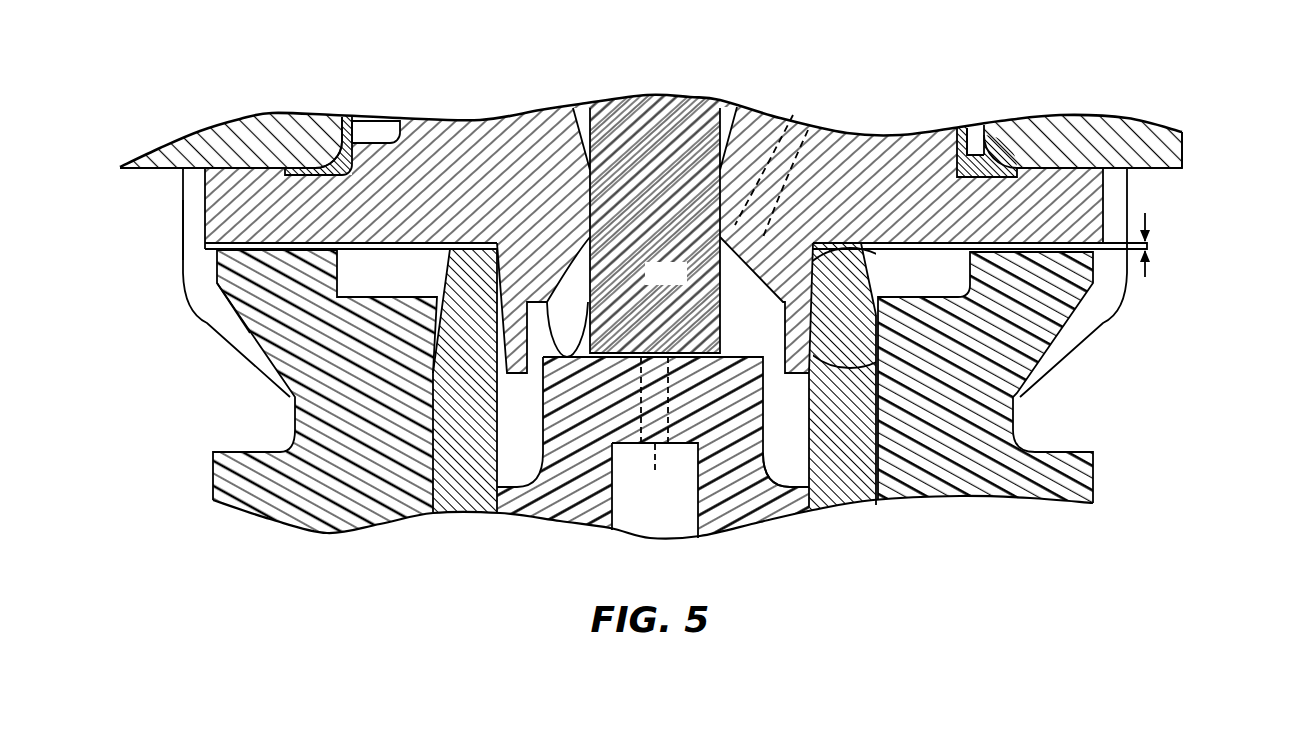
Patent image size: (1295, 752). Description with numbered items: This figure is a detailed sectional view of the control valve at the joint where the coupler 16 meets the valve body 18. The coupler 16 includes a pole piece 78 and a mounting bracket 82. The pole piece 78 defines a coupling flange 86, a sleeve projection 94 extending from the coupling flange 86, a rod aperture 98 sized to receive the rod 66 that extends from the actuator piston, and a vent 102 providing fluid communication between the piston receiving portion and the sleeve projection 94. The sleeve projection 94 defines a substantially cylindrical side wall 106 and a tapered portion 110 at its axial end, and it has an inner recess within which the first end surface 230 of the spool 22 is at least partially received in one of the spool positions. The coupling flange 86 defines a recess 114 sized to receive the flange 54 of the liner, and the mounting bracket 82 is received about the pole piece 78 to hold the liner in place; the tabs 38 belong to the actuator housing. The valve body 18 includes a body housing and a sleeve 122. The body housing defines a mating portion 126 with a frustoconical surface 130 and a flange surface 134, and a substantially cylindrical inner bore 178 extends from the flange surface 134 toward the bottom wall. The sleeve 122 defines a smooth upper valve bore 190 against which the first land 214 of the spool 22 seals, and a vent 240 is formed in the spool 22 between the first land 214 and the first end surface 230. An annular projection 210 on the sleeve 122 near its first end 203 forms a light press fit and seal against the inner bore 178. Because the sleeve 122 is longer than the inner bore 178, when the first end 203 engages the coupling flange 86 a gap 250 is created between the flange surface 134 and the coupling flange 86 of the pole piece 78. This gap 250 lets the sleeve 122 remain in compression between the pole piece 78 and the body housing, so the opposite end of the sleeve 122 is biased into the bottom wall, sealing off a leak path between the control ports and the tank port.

The coupler 16 is at (1186, 182).
The valve body 18 is at (1110, 466).
The spool 22 is at (575, 492).
The tabs 38 is at (203, 297).
The flange 54 is at (1017, 173).
The rod 66 is at (643, 133).
The pole piece 78 is at (833, 160).
The mounting bracket 82 is at (1130, 133).
The coupling flange 86 is at (1067, 186).
The sleeve projection 94 is at (860, 290).
The rod aperture 98 is at (713, 190).
The vent 102 is at (787, 113).
The cylindrical side wall 106 is at (812, 318).
The tapered portion 110 is at (860, 366).
The recess 114 is at (987, 167).
The sleeve 122 is at (469, 482).
The mating portion 126 is at (190, 354).
The frustoconical surface 130 is at (253, 343).
The flange surface 134 is at (240, 240).
The inner bore 178 is at (859, 503).
The upper valve bore 190 is at (503, 449).
The first end 203 is at (477, 247).
The annular projection 210 is at (400, 310).
The first land 214 is at (797, 503).
The first end surface 230 is at (738, 353).
The vent 240 is at (655, 447).
The gap 250 is at (1150, 263).